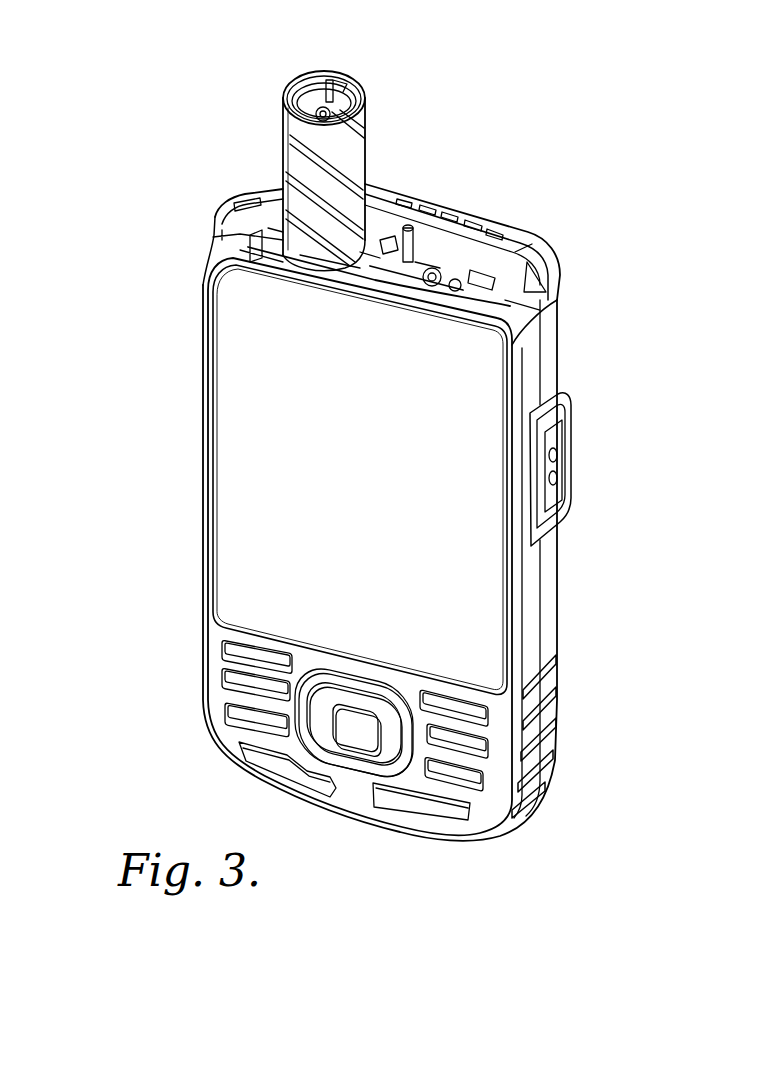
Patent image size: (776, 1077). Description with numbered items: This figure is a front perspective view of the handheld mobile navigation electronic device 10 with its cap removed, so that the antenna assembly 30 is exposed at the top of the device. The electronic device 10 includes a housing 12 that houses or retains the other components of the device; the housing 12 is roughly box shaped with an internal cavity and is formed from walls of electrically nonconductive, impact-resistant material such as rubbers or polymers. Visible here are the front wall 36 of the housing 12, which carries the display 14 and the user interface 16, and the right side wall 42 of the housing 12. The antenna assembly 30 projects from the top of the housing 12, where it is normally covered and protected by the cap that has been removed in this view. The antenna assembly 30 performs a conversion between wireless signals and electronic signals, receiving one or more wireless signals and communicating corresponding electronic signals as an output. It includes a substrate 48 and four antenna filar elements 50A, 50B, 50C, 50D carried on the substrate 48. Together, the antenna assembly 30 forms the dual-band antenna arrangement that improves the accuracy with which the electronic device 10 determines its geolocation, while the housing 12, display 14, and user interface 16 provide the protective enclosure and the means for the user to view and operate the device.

The handheld mobile navigation electronic device 10 is at (506, 106).
The housing 12 is at (572, 269).
The display 14 is at (237, 383).
The user interface 16 is at (224, 733).
The antenna assembly 30 is at (372, 74).
The front wall 36 is at (217, 638).
The right side wall 42 is at (540, 588).
The substrate 48 is at (293, 90).
The antenna filar element 50A is at (373, 170).
The antenna filar element 50B is at (324, 205).
The antenna filar element 50C is at (320, 238).
The antenna filar element 50D is at (348, 124).